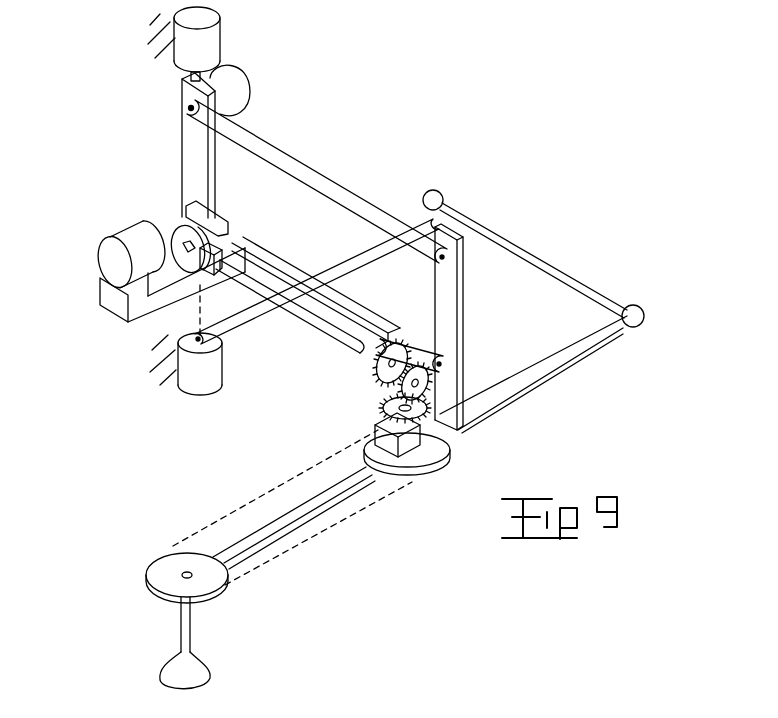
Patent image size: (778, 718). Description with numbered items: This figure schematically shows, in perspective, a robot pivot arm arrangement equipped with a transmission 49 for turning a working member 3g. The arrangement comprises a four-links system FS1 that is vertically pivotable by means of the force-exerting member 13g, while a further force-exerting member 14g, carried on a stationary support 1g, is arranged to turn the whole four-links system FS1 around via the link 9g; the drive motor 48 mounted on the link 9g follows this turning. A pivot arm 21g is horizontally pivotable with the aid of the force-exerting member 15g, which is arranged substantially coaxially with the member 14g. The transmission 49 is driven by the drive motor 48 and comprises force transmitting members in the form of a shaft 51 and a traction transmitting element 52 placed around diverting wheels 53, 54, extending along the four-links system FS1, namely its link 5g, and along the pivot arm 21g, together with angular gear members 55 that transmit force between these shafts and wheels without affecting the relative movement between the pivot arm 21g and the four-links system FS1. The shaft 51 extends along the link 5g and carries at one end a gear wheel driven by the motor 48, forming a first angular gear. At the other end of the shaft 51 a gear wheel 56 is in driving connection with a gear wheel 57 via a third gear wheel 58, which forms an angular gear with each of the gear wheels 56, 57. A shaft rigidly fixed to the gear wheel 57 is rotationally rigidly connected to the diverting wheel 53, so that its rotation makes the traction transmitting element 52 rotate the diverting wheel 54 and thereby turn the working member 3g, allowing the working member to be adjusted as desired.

The force-exerting member 14g is at (208, 43).
The fixed support 1g is at (162, 43).
The force-exerting member 13g is at (233, 90).
The link 9g is at (197, 163).
The four-links system FS1 is at (380, 193).
The drive motor 48 is at (127, 245).
The link 5g is at (282, 272).
The shaft 51 is at (303, 313).
The force-exerting member 15g is at (192, 375).
The gear wheel 56 is at (397, 340).
The third gear wheel 58 is at (427, 388).
The gear wheel 57 is at (418, 410).
The angular gear members 55 is at (350, 398).
The diverting wheel 53 is at (432, 450).
The pivot arm 21g is at (298, 520).
The traction transmitting element 52 is at (237, 512).
The diverting wheel 54 is at (162, 573).
The working member 3g is at (197, 668).
The transmission 49 is at (388, 533).